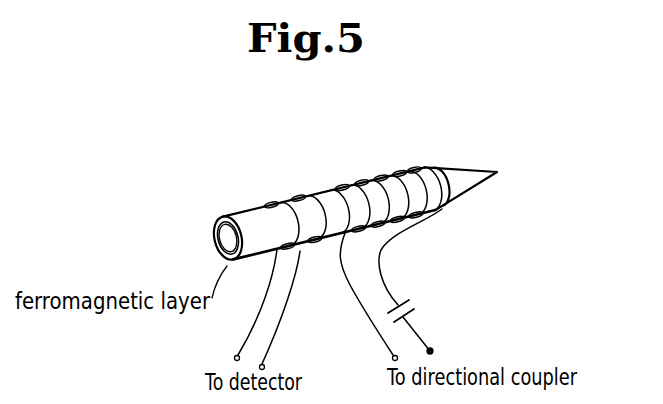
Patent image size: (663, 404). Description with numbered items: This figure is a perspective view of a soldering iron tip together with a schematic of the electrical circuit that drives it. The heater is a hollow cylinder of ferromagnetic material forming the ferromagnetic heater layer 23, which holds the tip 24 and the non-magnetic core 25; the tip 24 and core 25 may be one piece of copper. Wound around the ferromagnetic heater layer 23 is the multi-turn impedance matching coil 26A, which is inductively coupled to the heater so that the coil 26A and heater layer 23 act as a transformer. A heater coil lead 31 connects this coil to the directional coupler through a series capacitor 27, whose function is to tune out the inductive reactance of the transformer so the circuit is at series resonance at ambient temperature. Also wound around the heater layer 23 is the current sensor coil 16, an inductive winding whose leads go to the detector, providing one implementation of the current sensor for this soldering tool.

The current sensor coil 16 is at (299, 197).
The ferromagnetic heater layer 23 is at (438, 165).
The tip 24 is at (466, 173).
The non-magnetic core 25 is at (226, 238).
The multi-turn coil 26A is at (423, 158).
The series capacitor 27 is at (427, 307).
The heater coil lead 31 is at (366, 316).